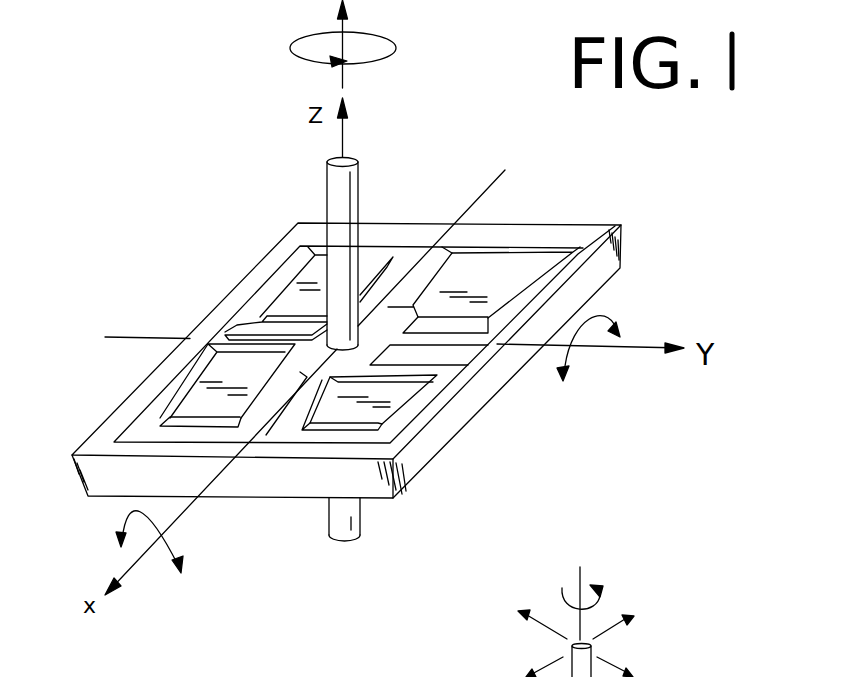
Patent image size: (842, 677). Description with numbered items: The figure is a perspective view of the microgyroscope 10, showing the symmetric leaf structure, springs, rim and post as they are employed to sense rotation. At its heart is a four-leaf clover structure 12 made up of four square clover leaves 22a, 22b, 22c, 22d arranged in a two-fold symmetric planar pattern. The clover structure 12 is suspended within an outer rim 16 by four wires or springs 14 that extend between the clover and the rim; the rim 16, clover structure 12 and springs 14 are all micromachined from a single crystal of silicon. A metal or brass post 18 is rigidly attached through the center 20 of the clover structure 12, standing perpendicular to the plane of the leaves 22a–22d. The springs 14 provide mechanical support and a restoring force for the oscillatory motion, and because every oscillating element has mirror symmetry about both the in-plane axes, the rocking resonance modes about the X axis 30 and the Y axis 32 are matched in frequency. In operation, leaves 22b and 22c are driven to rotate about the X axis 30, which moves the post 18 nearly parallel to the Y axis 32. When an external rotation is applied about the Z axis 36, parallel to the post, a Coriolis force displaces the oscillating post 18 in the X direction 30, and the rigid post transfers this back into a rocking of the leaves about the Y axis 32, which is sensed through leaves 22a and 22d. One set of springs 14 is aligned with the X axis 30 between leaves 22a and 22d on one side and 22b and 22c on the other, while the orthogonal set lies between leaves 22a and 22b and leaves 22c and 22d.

The microgyroscope 10 is at (212, 153).
The clover structure 12 is at (512, 263).
The springs 14 is at (407, 255).
The rim 16 is at (393, 498).
The post 18 is at (326, 186).
The center 20 is at (362, 534).
The clover leaf 22a is at (183, 403).
The clover leaf 22b is at (398, 403).
The clover leaf 22c is at (540, 262).
The clover leaf 22d is at (277, 302).
The X axis 30 is at (137, 560).
The Y axis 32 is at (646, 349).
The Z axis 36 is at (345, 72).